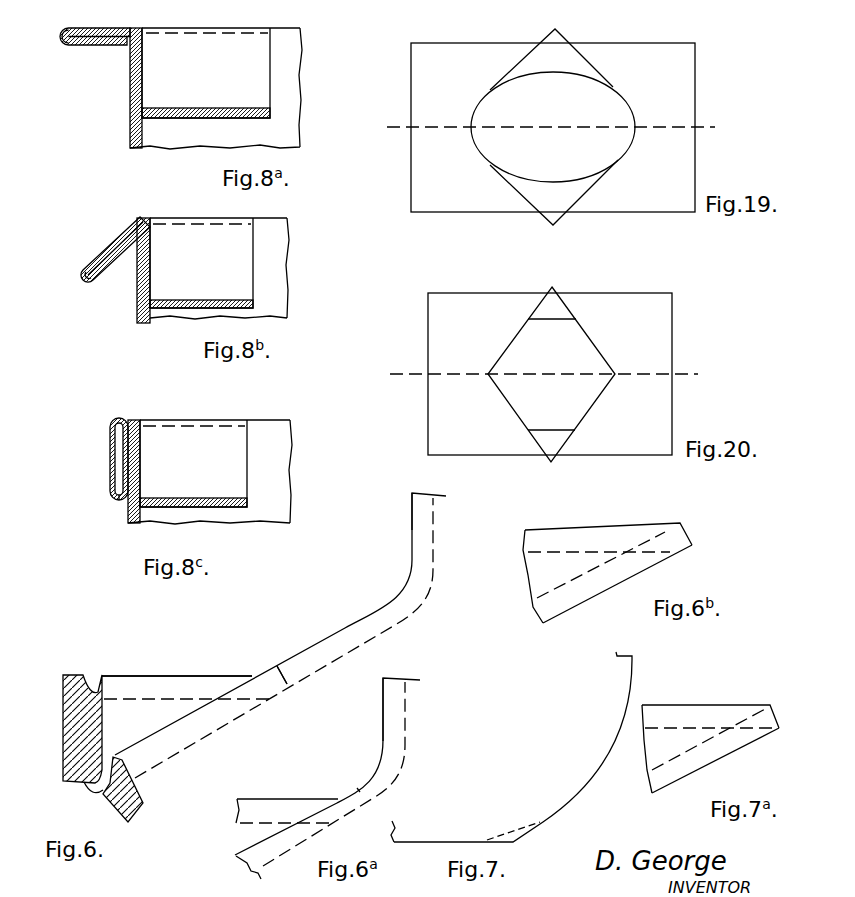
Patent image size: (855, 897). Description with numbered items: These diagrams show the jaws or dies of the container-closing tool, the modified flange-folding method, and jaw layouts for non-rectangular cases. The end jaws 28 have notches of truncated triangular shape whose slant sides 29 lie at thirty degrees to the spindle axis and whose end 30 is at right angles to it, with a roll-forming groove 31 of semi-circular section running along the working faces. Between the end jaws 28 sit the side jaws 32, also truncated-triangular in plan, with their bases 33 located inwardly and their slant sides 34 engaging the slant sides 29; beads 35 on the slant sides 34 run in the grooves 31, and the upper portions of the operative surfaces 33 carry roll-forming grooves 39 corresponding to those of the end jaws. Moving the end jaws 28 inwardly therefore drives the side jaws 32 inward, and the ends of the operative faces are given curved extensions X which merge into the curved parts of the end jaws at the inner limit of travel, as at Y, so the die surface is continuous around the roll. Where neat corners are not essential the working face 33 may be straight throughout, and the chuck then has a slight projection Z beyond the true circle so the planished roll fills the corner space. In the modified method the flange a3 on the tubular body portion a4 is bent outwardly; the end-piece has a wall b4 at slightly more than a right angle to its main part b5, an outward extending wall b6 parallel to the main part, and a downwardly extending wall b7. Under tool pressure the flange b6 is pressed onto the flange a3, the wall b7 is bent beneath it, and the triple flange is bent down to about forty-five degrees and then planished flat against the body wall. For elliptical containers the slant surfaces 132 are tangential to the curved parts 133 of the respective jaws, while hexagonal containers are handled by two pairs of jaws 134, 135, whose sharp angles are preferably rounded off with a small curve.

In FIG. 8A, the flange a3 is at (92, 41).
In FIG. 8B, the flange a3 is at (85, 285).
In FIG. 8C, the flange a3 is at (118, 467).
In FIG. 8A, the tubular body portion a4 is at (130, 125).
In FIG. 8B, the tubular body portion a4 is at (137, 314).
In FIG. 8C, the tubular body portion a4 is at (128, 517).
In FIG. 8A, the wall b4 is at (142, 75).
In FIG. 8B, the wall b4 is at (150, 270).
In FIG. 8C, the wall b4 is at (140, 465).
In FIG. 8A, the main part b5 is at (257, 109).
In FIG. 8B, the main part b5 is at (207, 300).
In FIG. 8C, the main part b5 is at (220, 498).
In FIG. 8A, the outward extending wall b6 is at (97, 28).
In FIG. 8B, the outward extending wall b6 is at (126, 236).
In FIG. 8C, the outward extending wall b6 is at (110, 437).
In FIG. 8A, the downwardly extending wall b7 is at (111, 46).
In FIG. 8B, the downwardly extending wall b7 is at (121, 269).
In FIG. 8C, the downwardly extending wall b7 is at (119, 501).
In FIG. 19, the slant surfaces 132 is at (583, 55).
In FIG. 19, the curved parts 133 is at (568, 63).
In FIG. 20, the jaws 134 is at (544, 374).
In FIG. 20, the jaws 135 is at (565, 311).
In FIG. 6, the end jaws 28 is at (435, 532).
In FIG. 6A, the end jaws 28 is at (411, 698).
In FIG. 6, the slant sides 29 is at (155, 728).
In FIG. 6A, the slant sides 29 is at (268, 846).
In FIG. 6A, the end of the notch 30 is at (383, 741).
In FIG. 6, the roll-forming groove 31 is at (312, 666).
In FIG. 6A, the roll-forming groove 31 is at (393, 768).
In FIG. 6, the side jaws 32 is at (177, 705).
In FIG. 6A, the side jaws 32 is at (240, 826).
In FIG. 6B, the side jaws 32 is at (539, 576).
In FIG. 7A, the side jaws 32 is at (661, 749).
In FIG. 6, the bases 33 is at (128, 677).
In FIG. 6A, the bases 33 is at (242, 800).
In FIG. 6B, the bases 33 is at (548, 530).
In FIG. 7A, the bases 33 is at (663, 706).
In FIG. 6, the slant sides 34 is at (122, 747).
In FIG. 6B, the slant sides 34 is at (553, 596).
In FIG. 7A, the slant sides 34 is at (697, 748).
In FIG. 6, the beads 35 is at (103, 796).
In FIG. 6B, the beads 35 is at (593, 588).
In FIG. 7A, the beads 35 is at (730, 745).
In FIG. 6, the roll-forming grooves 39 is at (179, 692).
In FIG. 6A, the roll-forming grooves 39 is at (282, 817).
In FIG. 6B, the roll-forming grooves 39 is at (602, 545).
In FIG. 7A, the roll-forming grooves 39 is at (710, 716).
In FIG. 6, the curved extensions X is at (240, 681).
In FIG. 6A, the merging point Y is at (357, 788).
In FIG. 7, the projection Z is at (510, 835).